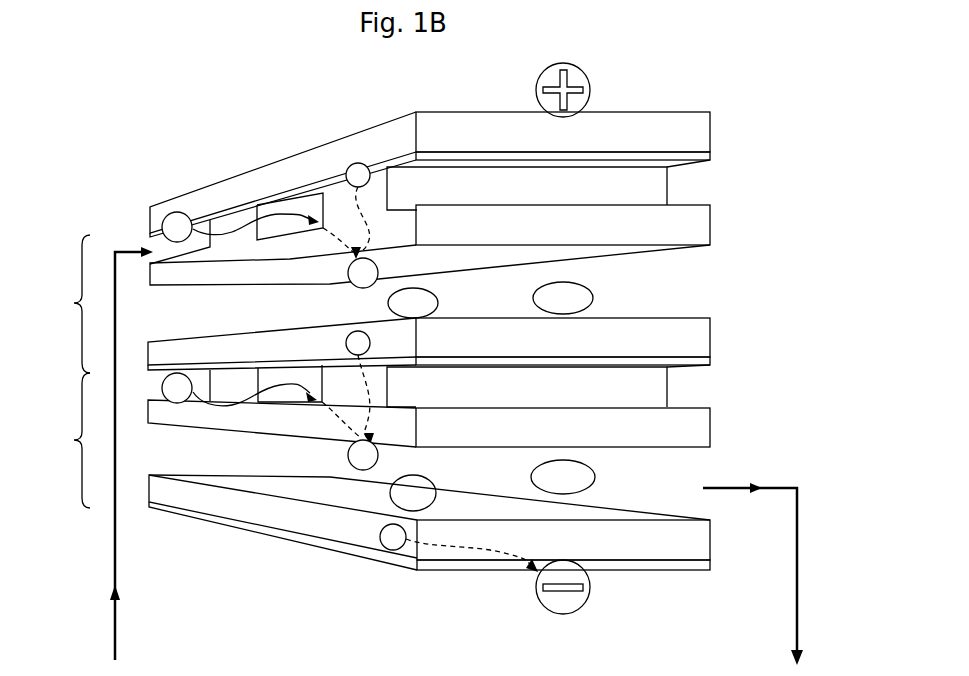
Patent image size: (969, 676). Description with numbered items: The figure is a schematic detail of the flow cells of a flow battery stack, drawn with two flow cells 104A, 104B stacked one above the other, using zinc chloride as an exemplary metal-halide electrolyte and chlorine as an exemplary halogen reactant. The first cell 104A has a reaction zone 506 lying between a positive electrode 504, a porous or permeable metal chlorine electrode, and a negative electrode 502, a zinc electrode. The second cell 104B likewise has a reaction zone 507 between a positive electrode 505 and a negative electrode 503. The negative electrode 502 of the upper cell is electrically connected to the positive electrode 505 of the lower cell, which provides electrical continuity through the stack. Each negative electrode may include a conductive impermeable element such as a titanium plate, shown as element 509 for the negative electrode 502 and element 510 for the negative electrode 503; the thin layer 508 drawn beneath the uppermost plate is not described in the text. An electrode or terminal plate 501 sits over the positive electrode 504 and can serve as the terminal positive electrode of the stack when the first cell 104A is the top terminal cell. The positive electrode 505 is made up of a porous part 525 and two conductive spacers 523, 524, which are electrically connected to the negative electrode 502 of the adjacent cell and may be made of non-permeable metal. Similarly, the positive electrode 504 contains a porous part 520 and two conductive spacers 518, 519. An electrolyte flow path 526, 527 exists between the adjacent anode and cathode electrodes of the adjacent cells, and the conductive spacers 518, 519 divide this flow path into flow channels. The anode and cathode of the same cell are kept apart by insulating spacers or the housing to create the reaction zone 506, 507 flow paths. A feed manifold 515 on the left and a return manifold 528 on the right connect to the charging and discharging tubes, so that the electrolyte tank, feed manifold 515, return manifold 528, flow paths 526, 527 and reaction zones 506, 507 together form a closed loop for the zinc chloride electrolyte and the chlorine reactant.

The first cell 104A is at (62, 304).
The second cell 104B is at (62, 440).
The electrode or terminal plate 501 is at (707, 126).
The negative electrode 502 is at (707, 331).
The negative electrode 503 is at (707, 536).
The positive electrode 504 is at (717, 160).
The positive electrode 505 is at (717, 367).
The reaction zone 506 is at (643, 293).
The reaction zone 507 is at (643, 485).
The separator layer (first cell) 508 is at (707, 156).
The conductive impermeable element 509 is at (707, 360).
The conductive impermeable element 510 is at (707, 565).
The feed manifold 515 is at (113, 549).
The conductive spacer 518 is at (228, 220).
The conductive spacer 519 is at (340, 197).
The porous part 520 is at (300, 258).
The conductive spacer 523 is at (228, 385).
The conductive spacer 524 is at (343, 390).
The porous part 525 is at (300, 423).
The electrolyte flow path 526 is at (312, 203).
The electrolyte flow path 527 is at (300, 380).
The return manifold 528 is at (800, 568).